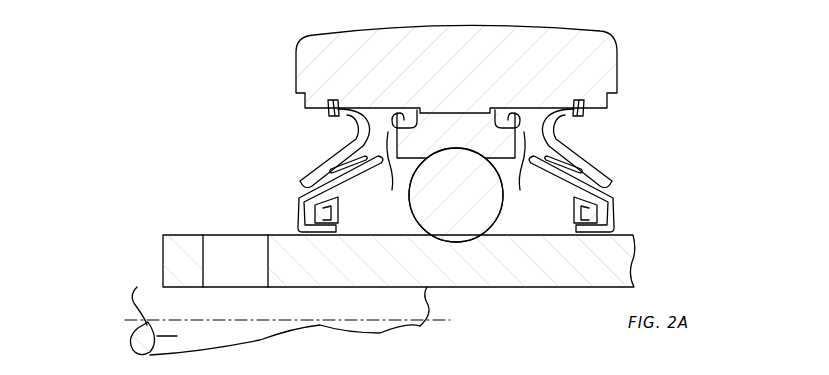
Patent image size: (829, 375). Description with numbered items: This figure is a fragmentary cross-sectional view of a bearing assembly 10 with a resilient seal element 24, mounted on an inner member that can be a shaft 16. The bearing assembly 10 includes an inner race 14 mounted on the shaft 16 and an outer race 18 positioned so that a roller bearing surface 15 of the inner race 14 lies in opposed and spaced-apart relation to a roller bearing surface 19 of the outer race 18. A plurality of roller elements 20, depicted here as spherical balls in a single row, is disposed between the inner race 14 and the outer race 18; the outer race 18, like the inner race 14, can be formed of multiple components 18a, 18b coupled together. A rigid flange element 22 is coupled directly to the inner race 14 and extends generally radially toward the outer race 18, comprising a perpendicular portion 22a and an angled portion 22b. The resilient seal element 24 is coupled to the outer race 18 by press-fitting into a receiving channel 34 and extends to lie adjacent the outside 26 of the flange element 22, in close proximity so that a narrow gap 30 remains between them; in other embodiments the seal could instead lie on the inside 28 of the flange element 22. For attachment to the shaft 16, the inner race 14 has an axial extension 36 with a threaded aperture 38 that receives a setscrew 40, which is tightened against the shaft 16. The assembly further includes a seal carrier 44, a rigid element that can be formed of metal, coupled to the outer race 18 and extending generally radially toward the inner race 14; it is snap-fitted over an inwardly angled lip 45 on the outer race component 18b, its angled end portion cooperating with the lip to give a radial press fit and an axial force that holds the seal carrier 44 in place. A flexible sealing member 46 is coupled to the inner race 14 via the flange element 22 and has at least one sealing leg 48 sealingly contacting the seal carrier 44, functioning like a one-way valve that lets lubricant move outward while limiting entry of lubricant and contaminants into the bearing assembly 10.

The bearing assembly 10 is at (678, 72).
The inner race 14 is at (420, 327).
The roller bearing surface 15 is at (462, 242).
The shaft 16 is at (133, 344).
The outer race 18 is at (598, 34).
The outer race component 18a is at (413, 60).
The outer race component 18b is at (457, 127).
The roller bearing surface 19 is at (500, 130).
The roller elements 20 is at (481, 217).
The flange element 22 is at (313, 250).
The perpendicular portion 22a is at (298, 215).
The angled portion 22b is at (300, 199).
The resilient seal element 24 is at (356, 136).
The outside 26 is at (330, 163).
The inside 28 is at (577, 182).
The narrow gap 30 is at (384, 172).
The receiving channel 34 is at (335, 100).
The axial extension 36 is at (175, 250).
The threaded aperture 38 is at (203, 265).
The setscrew 40 is at (140, 310).
The seal carrier 44 is at (348, 205).
The inwardly angled lip 45 is at (391, 114).
The flexible sealing member 46 is at (326, 240).
The sealing leg 48 is at (338, 205).